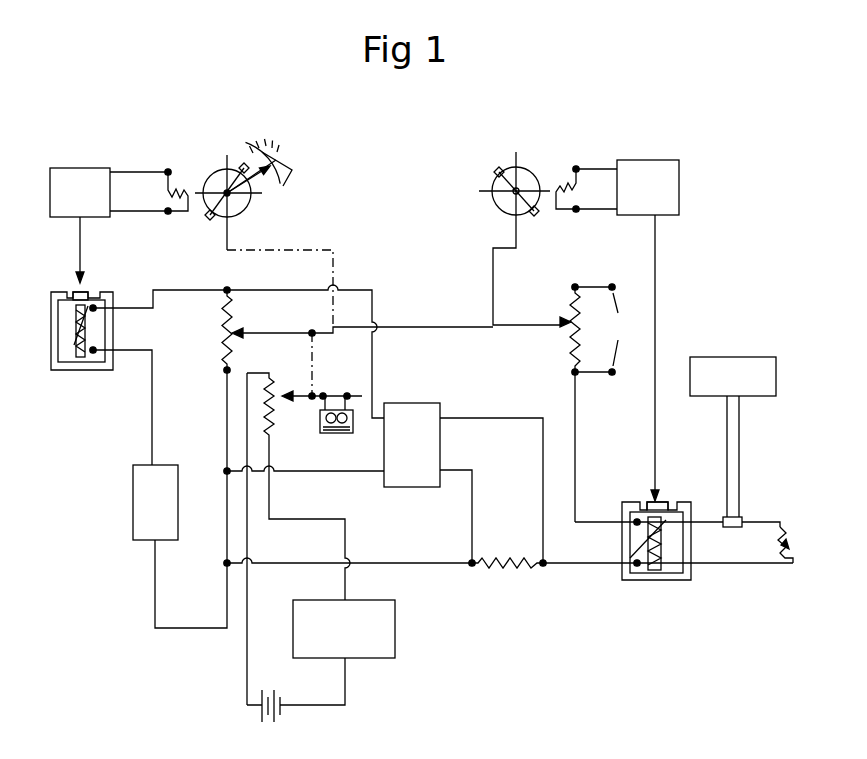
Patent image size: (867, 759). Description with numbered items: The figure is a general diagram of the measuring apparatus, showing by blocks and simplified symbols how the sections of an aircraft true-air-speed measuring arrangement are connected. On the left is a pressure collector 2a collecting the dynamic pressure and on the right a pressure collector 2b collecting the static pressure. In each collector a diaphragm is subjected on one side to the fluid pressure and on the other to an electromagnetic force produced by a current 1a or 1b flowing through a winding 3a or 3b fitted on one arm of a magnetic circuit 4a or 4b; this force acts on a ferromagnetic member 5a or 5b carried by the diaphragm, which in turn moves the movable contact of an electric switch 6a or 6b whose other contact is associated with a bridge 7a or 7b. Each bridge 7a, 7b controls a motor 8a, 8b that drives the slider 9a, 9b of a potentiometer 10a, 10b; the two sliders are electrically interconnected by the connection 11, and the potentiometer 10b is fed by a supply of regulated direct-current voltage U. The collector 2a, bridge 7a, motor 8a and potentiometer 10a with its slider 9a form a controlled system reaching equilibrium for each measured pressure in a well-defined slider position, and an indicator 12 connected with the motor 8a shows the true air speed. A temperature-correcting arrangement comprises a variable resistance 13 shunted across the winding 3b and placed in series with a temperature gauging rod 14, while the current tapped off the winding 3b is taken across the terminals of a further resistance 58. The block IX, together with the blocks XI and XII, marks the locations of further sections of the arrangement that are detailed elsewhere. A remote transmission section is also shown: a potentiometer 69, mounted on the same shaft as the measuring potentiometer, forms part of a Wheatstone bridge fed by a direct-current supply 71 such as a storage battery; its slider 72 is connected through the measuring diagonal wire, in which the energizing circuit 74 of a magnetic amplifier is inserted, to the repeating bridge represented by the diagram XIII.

The current 1a is at (127, 358).
The current 1b is at (668, 545).
The pressure collector 2a is at (68, 346).
The pressure collector 2b is at (678, 518).
The winding 3a is at (74, 344).
The winding 3b is at (675, 557).
The magnetic circuit 4a is at (83, 360).
The magnetic circuit 4b is at (621, 558).
The ferromagnetic member 5a is at (88, 297).
The ferromagnetic member 5b is at (662, 504).
The electric switch 6a is at (74, 290).
The electric switch 6b is at (648, 500).
The bridge 7a is at (78, 178).
The bridge 7b is at (646, 176).
The motor 8a is at (213, 178).
The motor 8b is at (528, 176).
The slider 9a is at (256, 335).
The slider 9b is at (522, 327).
The potentiometer 10a is at (236, 318).
The potentiometer 10b is at (566, 304).
The electrical interconnection 11 is at (443, 328).
The indicator 12 is at (283, 162).
The variable resistance 13 is at (780, 543).
The temperature gauging rod 14 is at (737, 521).
The resistance 58 is at (507, 580).
The potentiometer 69 is at (272, 430).
The supply of direct current 71 is at (269, 698).
The slider 72 is at (322, 409).
The energizing circuit 74 is at (333, 406).
The regulated D.C. voltage U is at (619, 329).
The block IX is at (147, 502).
The block XI is at (415, 414).
The block XII is at (708, 369).
The diagram XIII is at (383, 631).